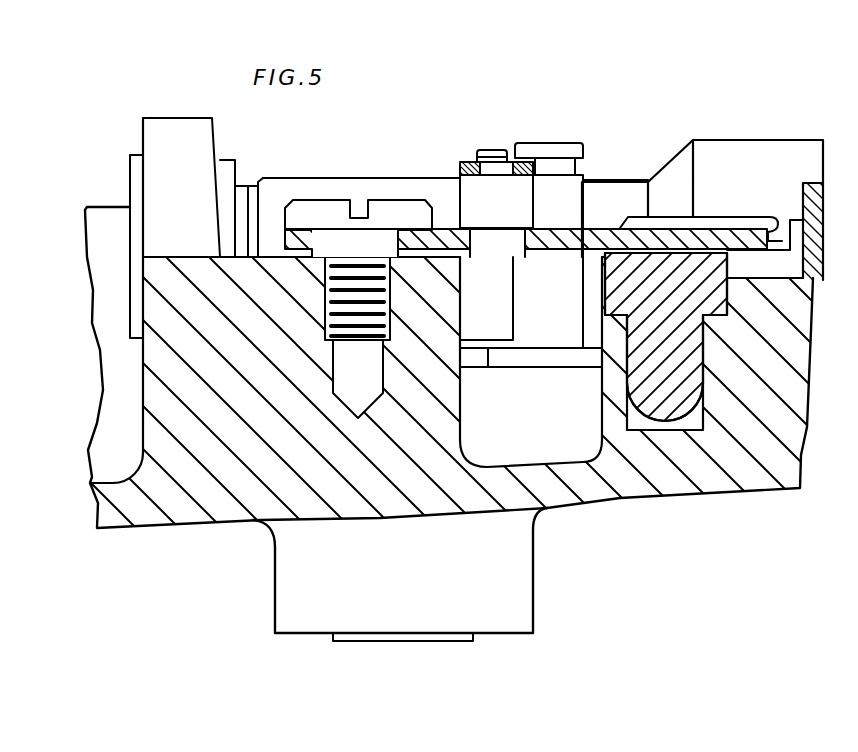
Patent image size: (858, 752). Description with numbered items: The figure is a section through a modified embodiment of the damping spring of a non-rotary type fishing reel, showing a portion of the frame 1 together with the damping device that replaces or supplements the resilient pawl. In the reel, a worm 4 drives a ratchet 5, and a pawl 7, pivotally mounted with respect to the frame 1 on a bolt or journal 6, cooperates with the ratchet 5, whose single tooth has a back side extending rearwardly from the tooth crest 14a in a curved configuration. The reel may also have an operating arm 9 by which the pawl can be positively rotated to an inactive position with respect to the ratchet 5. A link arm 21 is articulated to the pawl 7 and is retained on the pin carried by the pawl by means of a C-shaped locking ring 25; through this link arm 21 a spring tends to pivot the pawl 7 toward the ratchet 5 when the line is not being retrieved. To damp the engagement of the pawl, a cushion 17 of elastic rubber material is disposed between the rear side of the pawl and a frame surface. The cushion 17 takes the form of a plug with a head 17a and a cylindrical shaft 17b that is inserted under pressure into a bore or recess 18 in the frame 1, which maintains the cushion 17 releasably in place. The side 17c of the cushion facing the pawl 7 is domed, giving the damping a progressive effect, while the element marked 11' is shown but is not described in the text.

The frame 1 is at (800, 432).
The worm 4 is at (375, 215).
The ratchet 5 is at (747, 157).
The bolt or journal 6 is at (320, 215).
The pawl 7 is at (742, 233).
The operating arm 9 is at (540, 355).
The cap 11' is at (576, 244).
The tooth crest 14a is at (715, 215).
The cushion 17 is at (693, 348).
The head 17a is at (713, 297).
The shaft 17b is at (680, 390).
The domed side 17c is at (610, 245).
The bore or recess 18 is at (690, 420).
The link arm 21 is at (462, 165).
The C-shaped locking ring 25 is at (500, 150).